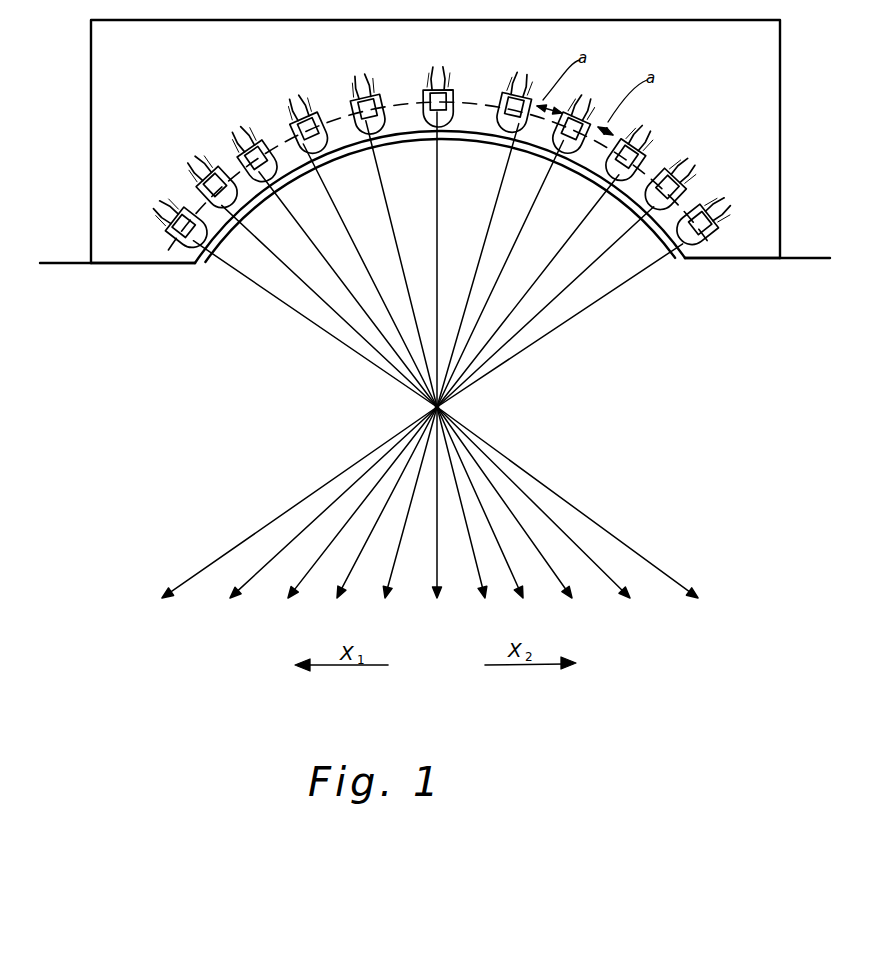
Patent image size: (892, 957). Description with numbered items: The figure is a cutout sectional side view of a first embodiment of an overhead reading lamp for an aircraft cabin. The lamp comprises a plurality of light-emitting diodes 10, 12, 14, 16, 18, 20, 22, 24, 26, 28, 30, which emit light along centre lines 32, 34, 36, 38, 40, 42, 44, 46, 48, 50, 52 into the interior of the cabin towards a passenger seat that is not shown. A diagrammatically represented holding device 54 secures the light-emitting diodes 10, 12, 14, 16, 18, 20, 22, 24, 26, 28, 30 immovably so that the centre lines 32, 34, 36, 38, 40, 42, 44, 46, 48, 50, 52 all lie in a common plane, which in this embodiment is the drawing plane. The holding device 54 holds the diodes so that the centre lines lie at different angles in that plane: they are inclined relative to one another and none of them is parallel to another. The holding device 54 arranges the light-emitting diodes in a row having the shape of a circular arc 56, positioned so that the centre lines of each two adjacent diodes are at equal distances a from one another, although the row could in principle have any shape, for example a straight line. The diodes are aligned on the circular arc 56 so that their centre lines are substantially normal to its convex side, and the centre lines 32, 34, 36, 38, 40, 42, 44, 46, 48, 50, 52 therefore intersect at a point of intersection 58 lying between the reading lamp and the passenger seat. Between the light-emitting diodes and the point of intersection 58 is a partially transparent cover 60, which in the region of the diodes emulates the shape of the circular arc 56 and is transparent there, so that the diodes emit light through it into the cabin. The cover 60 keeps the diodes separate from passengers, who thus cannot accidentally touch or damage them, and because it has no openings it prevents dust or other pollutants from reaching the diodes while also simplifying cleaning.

The light-emitting diode 10 is at (168, 240).
The light-emitting diode 12 is at (195, 168).
The light-emitting diode 14 is at (242, 142).
The light-emitting diode 16 is at (294, 112).
The light-emitting diode 18 is at (360, 88).
The light-emitting diode 20 is at (450, 62).
The light-emitting diode 22 is at (545, 74).
The light-emitting diode 24 is at (590, 108).
The light-emitting diode 26 is at (652, 140).
The light-emitting diode 28 is at (700, 176).
The light-emitting diode 30 is at (716, 228).
The centre line 32 is at (275, 292).
The centre line 34 is at (284, 262).
The centre line 36 is at (316, 247).
The centre line 38 is at (355, 232).
The centre line 40 is at (391, 207).
The centre line 42 is at (437, 215).
The centre line 44 is at (483, 223).
The centre line 46 is at (542, 190).
The centre line 48 is at (590, 207).
The centre line 50 is at (624, 231).
The centre line 52 is at (648, 264).
The holding device 54 is at (105, 53).
The circular arc 56 is at (401, 104).
The point of intersection 58 is at (449, 409).
The cover 60 is at (58, 265).